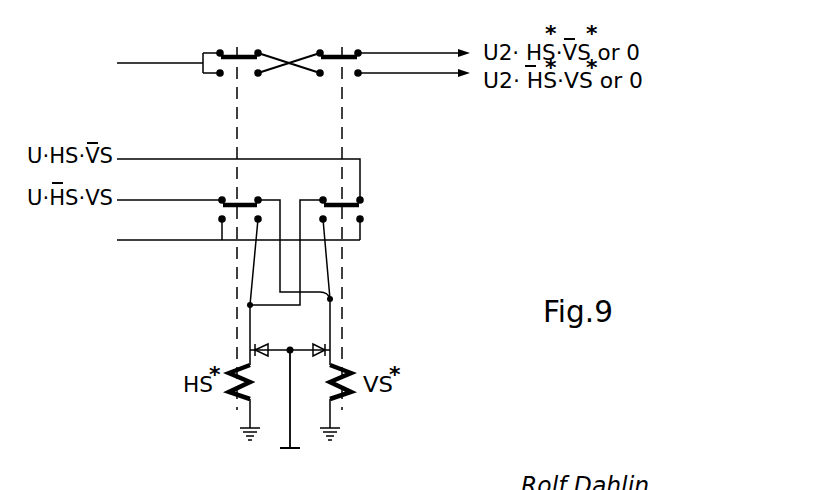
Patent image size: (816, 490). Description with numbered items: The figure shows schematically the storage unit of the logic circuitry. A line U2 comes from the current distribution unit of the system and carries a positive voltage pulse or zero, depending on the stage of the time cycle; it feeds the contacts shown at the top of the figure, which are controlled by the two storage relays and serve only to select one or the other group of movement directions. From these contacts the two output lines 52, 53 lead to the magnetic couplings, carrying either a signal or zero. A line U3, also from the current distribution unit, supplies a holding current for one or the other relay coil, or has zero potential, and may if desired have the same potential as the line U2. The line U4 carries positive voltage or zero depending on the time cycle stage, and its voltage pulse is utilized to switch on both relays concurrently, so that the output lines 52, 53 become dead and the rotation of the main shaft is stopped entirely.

The output line 52 is at (414, 40).
The output line 53 is at (414, 88).
The line U2 is at (149, 64).
The line U3 is at (209, 238).
The line U4 is at (295, 416).